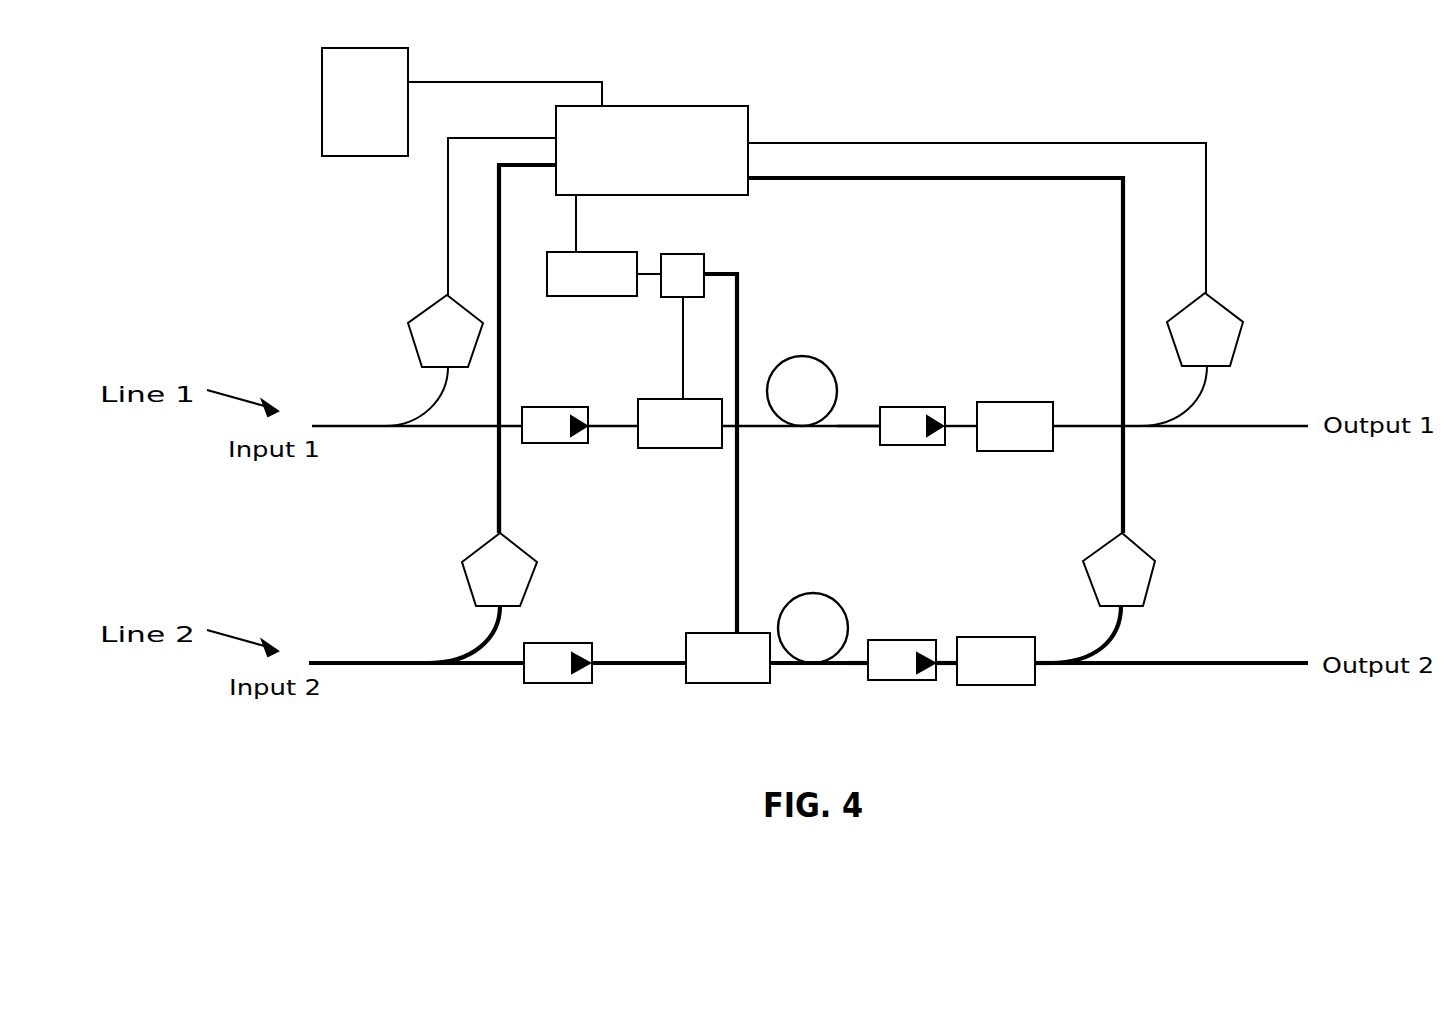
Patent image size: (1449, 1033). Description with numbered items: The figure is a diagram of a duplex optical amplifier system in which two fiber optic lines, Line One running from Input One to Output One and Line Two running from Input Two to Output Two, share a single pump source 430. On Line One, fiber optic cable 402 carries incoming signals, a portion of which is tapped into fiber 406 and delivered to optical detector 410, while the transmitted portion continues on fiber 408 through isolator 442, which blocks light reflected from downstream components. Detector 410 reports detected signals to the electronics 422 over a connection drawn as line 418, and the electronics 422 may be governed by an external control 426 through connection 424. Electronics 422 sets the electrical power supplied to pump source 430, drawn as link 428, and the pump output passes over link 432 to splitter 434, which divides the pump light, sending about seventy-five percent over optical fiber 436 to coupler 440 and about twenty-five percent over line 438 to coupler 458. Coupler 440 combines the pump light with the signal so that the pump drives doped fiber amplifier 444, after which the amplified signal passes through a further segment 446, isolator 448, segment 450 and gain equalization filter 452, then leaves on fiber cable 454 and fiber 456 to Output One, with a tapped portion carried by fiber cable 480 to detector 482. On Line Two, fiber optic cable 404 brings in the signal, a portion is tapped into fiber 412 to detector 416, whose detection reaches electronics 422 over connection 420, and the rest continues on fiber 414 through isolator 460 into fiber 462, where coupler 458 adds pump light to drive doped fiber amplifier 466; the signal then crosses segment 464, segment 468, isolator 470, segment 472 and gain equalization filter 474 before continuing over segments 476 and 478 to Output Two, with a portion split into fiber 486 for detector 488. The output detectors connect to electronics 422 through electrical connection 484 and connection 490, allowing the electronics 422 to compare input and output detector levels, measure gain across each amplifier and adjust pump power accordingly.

The fiber optic cable 402 is at (340, 420).
The fiber optic cable 404 is at (358, 658).
The fiber 406 is at (406, 412).
The fiber 408 is at (450, 432).
The optical detector 410 is at (430, 320).
The fiber 412 is at (468, 648).
The fiber 414 is at (497, 672).
The detector 416 is at (475, 553).
The detector signal connection 418 is at (447, 232).
The detector signal connection 420 is at (490, 520).
The electronics subsystem 422 is at (660, 106).
The external control connection 424 is at (520, 78).
The external control 426 is at (320, 104).
The pump control connection 428 is at (580, 236).
The pump source 430 is at (592, 298).
The pump output fiber 432 is at (648, 280).
The splitter 434 is at (676, 254).
The fiber optic cable 436 is at (682, 350).
The line 438 is at (741, 299).
The coupler 440 is at (690, 450).
The isolator 442 is at (572, 446).
The doped fiber amplifier 444 is at (792, 356).
The doped fiber amplifier 446 is at (835, 430).
The isolator 448 is at (922, 407).
The fiber segment 450 is at (963, 430).
The gain equalization filter 452 is at (1012, 402).
The fiber cable 454 is at (1090, 433).
The fiber 456 is at (1280, 432).
The coupler 458 is at (724, 688).
The isolator 460 is at (558, 640).
The fiber 462 is at (630, 672).
The fiber segment 464 is at (785, 670).
The doped fiber amplifier 466 is at (806, 592).
The fiber segment 468 is at (848, 670).
The isolator 470 is at (922, 684).
The isolator 472 is at (945, 648).
The gain equalization filter 474 is at (1018, 637).
The fiber segment 476 is at (1040, 686).
The output fiber line 2 478 is at (1220, 670).
The fiber cable 480 is at (1202, 398).
The detector 482 is at (1222, 306).
The electrical connection 484 is at (1133, 143).
The fiber 486 is at (1118, 636).
The detector 488 is at (1143, 546).
The detector signal connection 490 is at (1030, 185).